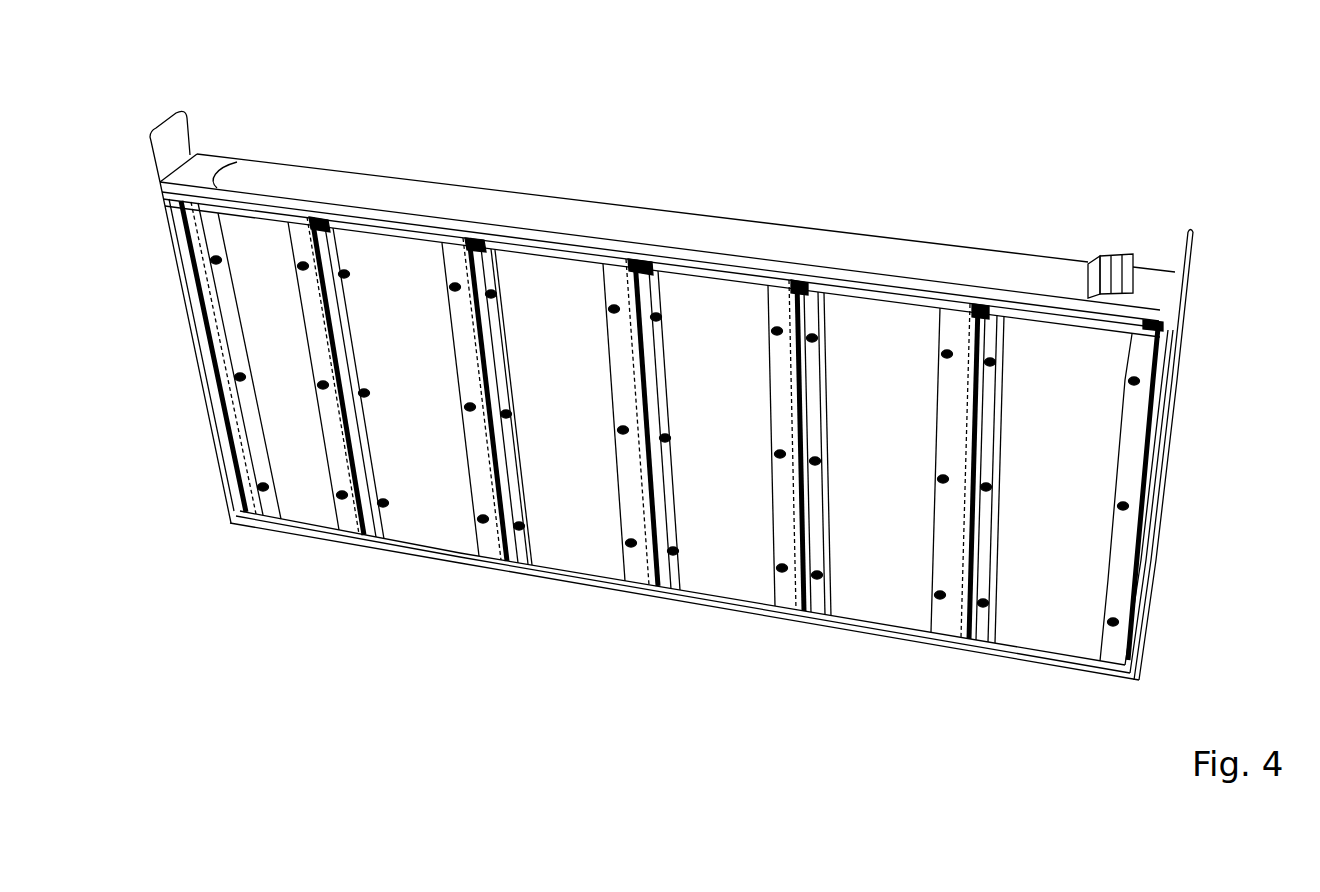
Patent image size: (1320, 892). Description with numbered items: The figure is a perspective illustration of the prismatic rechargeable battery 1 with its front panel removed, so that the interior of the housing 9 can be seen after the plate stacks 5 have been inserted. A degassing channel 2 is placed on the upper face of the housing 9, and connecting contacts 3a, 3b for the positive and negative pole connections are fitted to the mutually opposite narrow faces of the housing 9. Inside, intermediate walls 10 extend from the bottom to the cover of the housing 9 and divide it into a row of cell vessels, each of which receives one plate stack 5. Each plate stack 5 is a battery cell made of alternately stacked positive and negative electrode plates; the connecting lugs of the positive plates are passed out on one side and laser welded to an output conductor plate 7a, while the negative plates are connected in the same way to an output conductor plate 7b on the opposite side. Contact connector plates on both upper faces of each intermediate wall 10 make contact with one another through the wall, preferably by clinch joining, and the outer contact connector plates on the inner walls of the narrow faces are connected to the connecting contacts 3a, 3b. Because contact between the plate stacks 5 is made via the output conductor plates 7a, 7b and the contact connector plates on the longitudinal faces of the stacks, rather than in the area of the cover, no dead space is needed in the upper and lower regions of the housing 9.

The prismatic rechargeable battery 1 is at (428, 93).
The degassing channel 2 is at (700, 230).
The connecting contact 3a is at (148, 152).
The connecting contact 3b is at (1192, 257).
The plate stack 5 is at (872, 598).
The output conductor plate 7a is at (640, 563).
The output conductor plate 7b is at (664, 568).
The housing 9 is at (202, 405).
The intermediate wall 10 is at (497, 540).